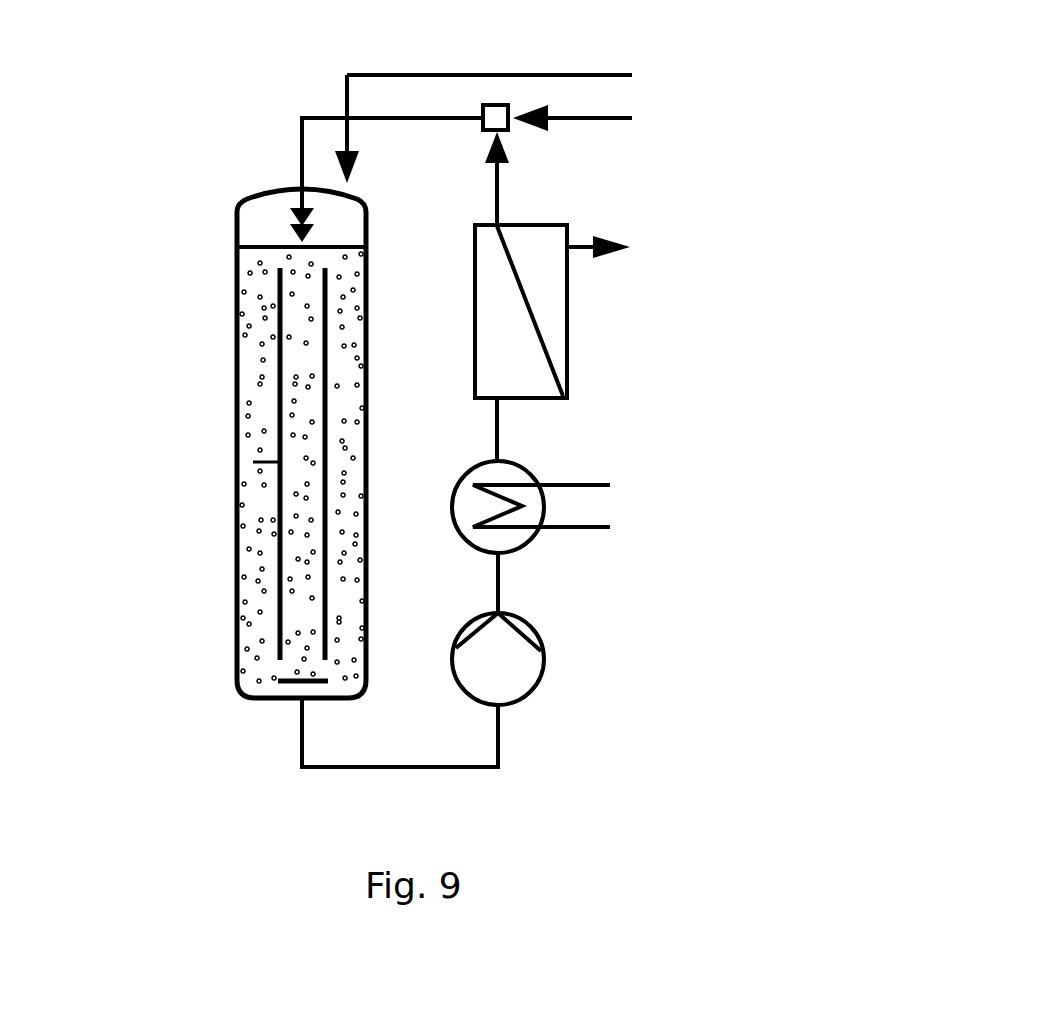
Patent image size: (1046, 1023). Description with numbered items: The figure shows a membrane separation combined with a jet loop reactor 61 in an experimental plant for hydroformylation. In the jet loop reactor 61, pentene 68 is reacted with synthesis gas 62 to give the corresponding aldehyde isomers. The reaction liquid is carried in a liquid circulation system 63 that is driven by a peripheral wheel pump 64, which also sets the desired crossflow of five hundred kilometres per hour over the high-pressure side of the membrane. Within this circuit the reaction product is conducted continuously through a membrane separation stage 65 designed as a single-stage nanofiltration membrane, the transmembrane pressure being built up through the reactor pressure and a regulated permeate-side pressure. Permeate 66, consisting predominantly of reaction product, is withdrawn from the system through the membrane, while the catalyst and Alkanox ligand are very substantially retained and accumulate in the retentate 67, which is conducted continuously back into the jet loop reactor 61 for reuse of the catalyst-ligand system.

The jet loop reactor 61 is at (220, 256).
The synthesis gas 62 is at (334, 167).
The liquid circulation system 63 is at (438, 389).
The peripheral wheel pump 64 is at (549, 663).
The membrane separation stage 65 is at (584, 351).
The permeate 66 is at (576, 272).
The retentate 67 is at (521, 178).
The 1-pentene 68 is at (590, 50).